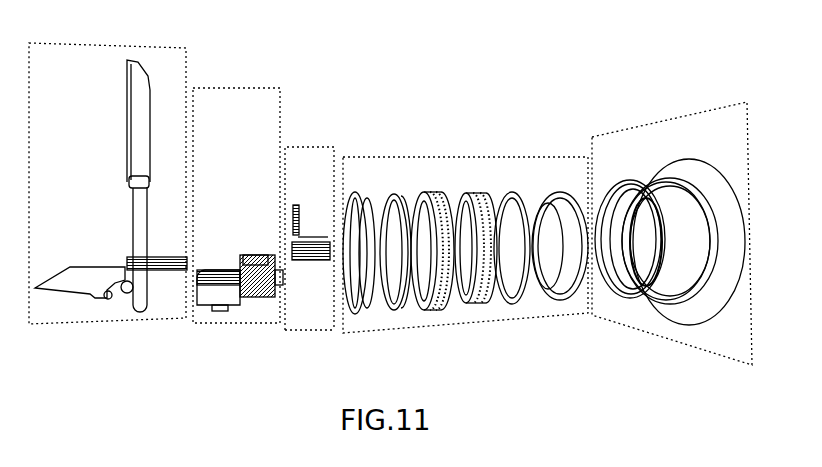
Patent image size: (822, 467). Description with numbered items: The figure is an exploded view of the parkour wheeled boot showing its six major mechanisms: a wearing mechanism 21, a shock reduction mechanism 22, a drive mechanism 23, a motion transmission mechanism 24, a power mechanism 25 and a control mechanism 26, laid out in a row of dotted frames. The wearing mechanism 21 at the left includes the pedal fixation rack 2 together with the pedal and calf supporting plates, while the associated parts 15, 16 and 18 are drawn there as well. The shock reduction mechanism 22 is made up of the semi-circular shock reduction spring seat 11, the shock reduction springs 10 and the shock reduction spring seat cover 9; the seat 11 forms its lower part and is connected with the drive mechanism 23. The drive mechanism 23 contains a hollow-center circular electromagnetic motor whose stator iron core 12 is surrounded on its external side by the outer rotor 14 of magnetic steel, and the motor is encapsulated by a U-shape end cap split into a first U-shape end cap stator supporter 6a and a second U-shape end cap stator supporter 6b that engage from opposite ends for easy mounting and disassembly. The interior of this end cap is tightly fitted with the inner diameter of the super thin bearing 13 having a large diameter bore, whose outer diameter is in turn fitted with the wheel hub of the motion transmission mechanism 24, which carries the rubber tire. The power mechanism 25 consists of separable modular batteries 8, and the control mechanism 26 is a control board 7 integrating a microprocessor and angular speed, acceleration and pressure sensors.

The wearing mechanism 21 is at (164, 67).
The shock reduction mechanism 22 is at (245, 120).
The drive mechanism 23 is at (380, 165).
The motion transmission mechanism 24 is at (630, 138).
The power mechanism 25 is at (310, 318).
The control mechanism 26 is at (297, 157).
The first U-shape end cap stator supporter 6a is at (355, 193).
The second U-shape end cap stator supporter 6b is at (547, 202).
The stator iron core 12 is at (473, 193).
The super thin bearing having a large diameter bore 13 is at (395, 192).
The outer rotor of magnetic steel 14 is at (430, 192).
The blade 18 is at (127, 153).
The pivot knuckle 16 is at (130, 222).
The pedal fixation rack 2 is at (132, 255).
The wedge 15 is at (78, 277).
The shock reduction spring seat cover 9 is at (243, 255).
The shock reduction springs 10 is at (265, 296).
The semi-circular shock reduction spring seat 11 is at (213, 290).
The control board 7 is at (302, 225).
The batteries 8 is at (315, 262).